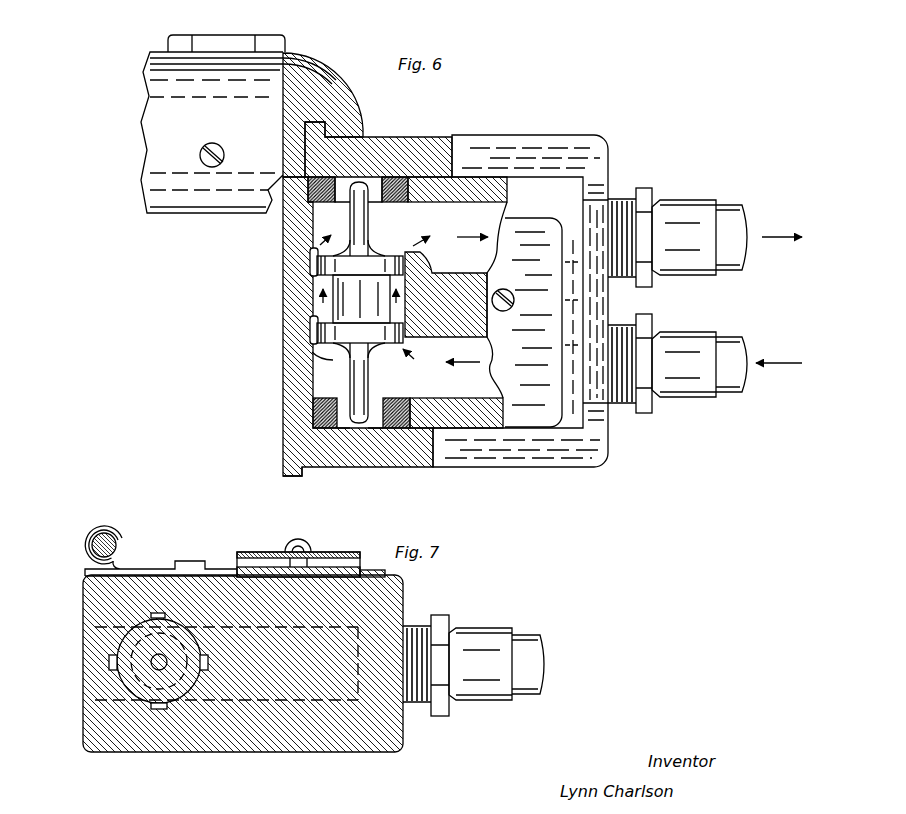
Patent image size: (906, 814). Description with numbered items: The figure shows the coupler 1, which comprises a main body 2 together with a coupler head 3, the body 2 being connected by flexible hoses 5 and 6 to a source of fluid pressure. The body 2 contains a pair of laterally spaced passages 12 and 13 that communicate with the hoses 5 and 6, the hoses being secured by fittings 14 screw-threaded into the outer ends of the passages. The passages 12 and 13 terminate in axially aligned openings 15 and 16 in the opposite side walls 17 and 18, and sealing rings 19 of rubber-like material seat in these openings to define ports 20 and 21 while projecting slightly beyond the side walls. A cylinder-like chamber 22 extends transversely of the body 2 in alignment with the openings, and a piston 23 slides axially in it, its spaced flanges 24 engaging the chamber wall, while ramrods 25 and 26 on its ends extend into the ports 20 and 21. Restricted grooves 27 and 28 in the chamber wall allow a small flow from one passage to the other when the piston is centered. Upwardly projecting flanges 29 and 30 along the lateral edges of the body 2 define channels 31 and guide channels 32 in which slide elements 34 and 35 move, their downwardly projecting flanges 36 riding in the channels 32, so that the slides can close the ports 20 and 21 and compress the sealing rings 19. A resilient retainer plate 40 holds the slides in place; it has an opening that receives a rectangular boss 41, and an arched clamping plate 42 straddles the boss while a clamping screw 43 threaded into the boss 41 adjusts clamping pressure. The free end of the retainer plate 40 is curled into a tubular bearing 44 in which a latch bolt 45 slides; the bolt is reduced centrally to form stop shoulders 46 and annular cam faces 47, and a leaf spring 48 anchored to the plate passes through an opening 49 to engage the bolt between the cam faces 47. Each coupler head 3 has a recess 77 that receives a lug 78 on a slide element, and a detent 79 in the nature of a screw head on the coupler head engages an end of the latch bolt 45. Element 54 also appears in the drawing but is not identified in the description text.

In FIG. 6, the coupler 1 is at (606, 302).
In FIG. 6, the main body 2 is at (293, 377).
In FIG. 7, the main body 2 is at (282, 735).
In FIG. 6, the coupler head 3 is at (318, 90).
In FIG. 6, the flexible hose 5 is at (733, 228).
In FIG. 7, the flexible hose 5 is at (527, 647).
In FIG. 6, the flexible hose 6 is at (728, 384).
In FIG. 6, the passage 12 is at (454, 229).
In FIG. 7, the passage 12 is at (363, 610).
In FIG. 6, the passage 13 is at (450, 393).
In FIG. 6, the fitting 14 is at (680, 347).
In FIG. 7, the fitting 14 is at (438, 650).
In FIG. 6, the opening 15 is at (407, 185).
In FIG. 6, the opening 16 is at (300, 426).
In FIG. 6, the side wall 17 is at (480, 173).
In FIG. 6, the side wall 18 is at (478, 430).
In FIG. 6, the sealing ring 19 is at (310, 201).
In FIG. 6, the port 20 is at (377, 183).
In FIG. 6, the port 21 is at (340, 420).
In FIG. 6, the cylinder-like chamber 22 is at (313, 305).
In FIG. 6, the piston 23 is at (340, 296).
In FIG. 7, the piston 23 is at (170, 677).
In FIG. 6, the flange 24 is at (342, 273).
In FIG. 7, the flange 24 is at (120, 646).
In FIG. 6, the ramrod 25 is at (360, 222).
In FIG. 6, the ramrod 26 is at (364, 392).
In FIG. 6, the groove 27 is at (318, 268).
In FIG. 6, the groove 28 is at (313, 333).
In FIG. 7, the groove 28 is at (108, 662).
In FIG. 6, the flange 29 is at (603, 188).
In FIG. 6, the flange 30 is at (573, 146).
In FIG. 6, the channel 31 is at (597, 203).
In FIG. 6, the guide channel 32 is at (602, 167).
In FIG. 6, the slide element 34 is at (358, 137).
In FIG. 6, the slide element 35 is at (357, 452).
In FIG. 6, the downwardly projecting flange 36 is at (222, 38).
In FIG. 6, the retainer plate 40 is at (543, 412).
In FIG. 7, the retainer plate 40 is at (212, 568).
In FIG. 7, the rectangular boss 41 is at (263, 563).
In FIG. 6, the clamping plate 42 is at (507, 272).
In FIG. 7, the clamping plate 42 is at (332, 553).
In FIG. 6, the clamping screw 43 is at (460, 335).
In FIG. 7, the clamping screw 43 is at (300, 543).
In FIG. 7, the tubular bearing 44 is at (97, 528).
In FIG. 7, the latch bolt 45 is at (110, 537).
In FIG. 7, the stop shoulder 46 is at (87, 538).
In FIG. 7, the annular cam face 47 is at (85, 554).
In FIG. 7, the leaf spring 48 is at (133, 568).
In FIG. 7, the opening 49 is at (90, 566).
In FIG. 6, the wall 54 is at (270, 178).
In FIG. 6, the recess 77 is at (330, 102).
In FIG. 6, the lug 78 is at (346, 114).
In FIG. 6, the detent 79 is at (200, 156).